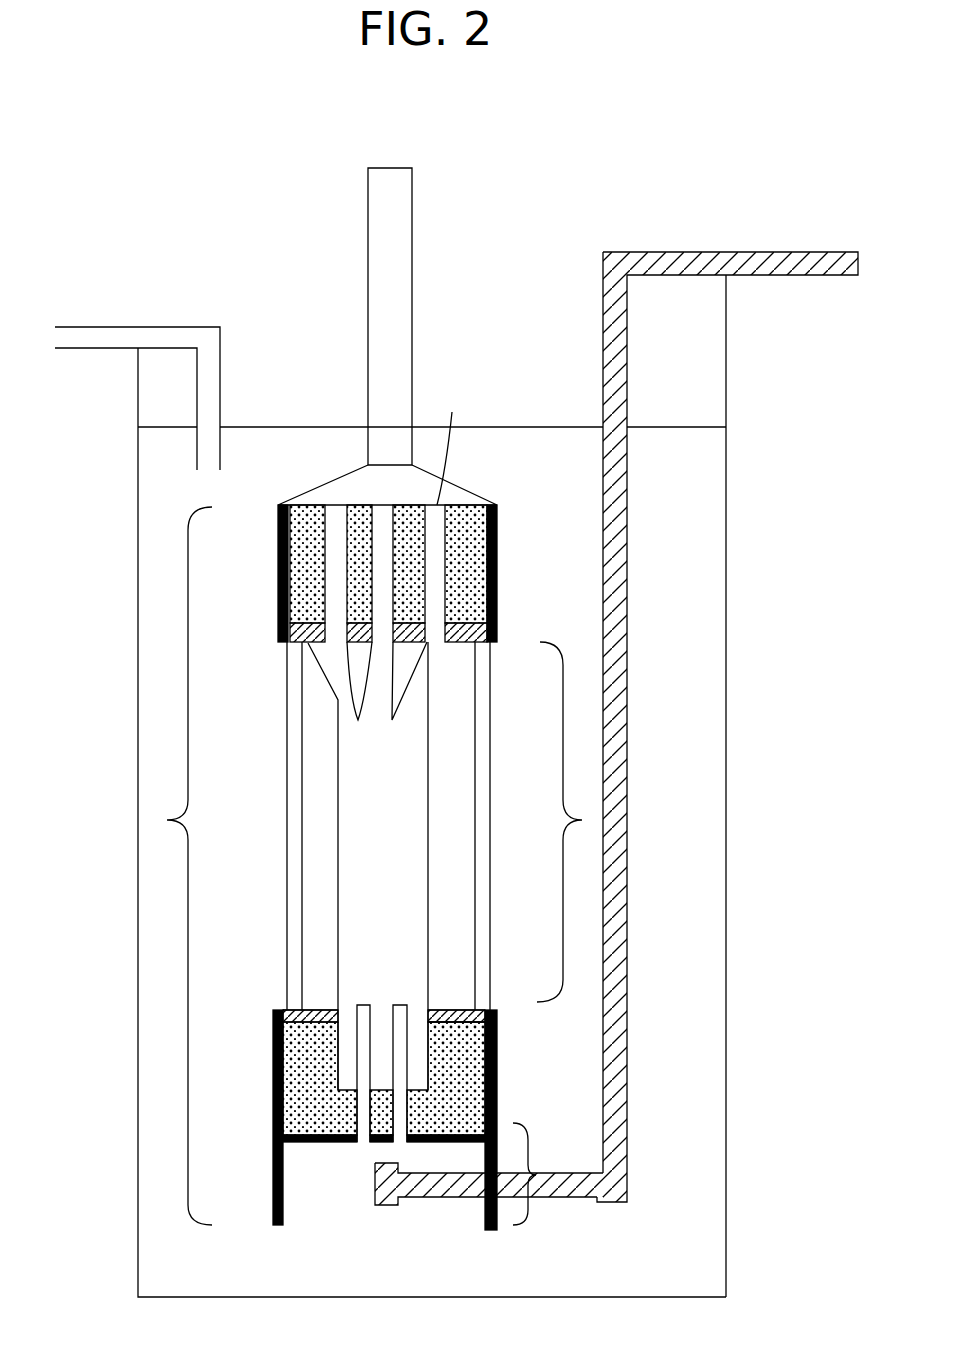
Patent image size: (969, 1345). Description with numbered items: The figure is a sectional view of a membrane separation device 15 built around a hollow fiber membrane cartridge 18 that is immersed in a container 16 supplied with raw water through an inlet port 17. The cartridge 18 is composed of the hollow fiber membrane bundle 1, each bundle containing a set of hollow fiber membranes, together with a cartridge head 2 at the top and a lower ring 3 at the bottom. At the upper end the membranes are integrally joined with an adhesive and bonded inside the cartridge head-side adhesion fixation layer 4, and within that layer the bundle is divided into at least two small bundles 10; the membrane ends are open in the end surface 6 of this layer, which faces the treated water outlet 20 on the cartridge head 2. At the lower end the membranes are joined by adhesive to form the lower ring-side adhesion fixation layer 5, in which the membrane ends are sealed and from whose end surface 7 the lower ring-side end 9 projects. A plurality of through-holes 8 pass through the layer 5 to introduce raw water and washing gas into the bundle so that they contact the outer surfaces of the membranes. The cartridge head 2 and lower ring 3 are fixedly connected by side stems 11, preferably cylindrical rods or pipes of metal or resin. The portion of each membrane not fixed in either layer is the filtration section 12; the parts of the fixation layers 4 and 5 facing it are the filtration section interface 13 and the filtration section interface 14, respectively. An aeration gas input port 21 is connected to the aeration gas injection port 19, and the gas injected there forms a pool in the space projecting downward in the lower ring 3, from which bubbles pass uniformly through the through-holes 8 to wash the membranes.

The hollow fiber membrane bundle 1 is at (405, 877).
The cartridge head 2 is at (500, 538).
The lower ring 3 is at (497, 1096).
The cartridge head-side adhesion fixation layer 4 is at (500, 592).
The lower ring-side adhesion fixation layer 5 is at (445, 1060).
The end surface of cartridge head-side adhesion fixation layer 6 is at (455, 439).
The end surface of lower ring-side adhesion fixation layer 7 is at (310, 1142).
The through-hole 8 is at (400, 1142).
The lower ring-side end 9 is at (537, 1174).
The small bundle 10 is at (345, 697).
The side stem 11 is at (300, 796).
The filtration section 12 is at (585, 820).
The filtration section interface of cartridge head-side adhesion fixation layer 13 is at (313, 647).
The filtration section interface of lower ring-side adhesion fixation layer 14 is at (320, 1010).
The membrane separation device 15 is at (728, 663).
The container 16 is at (138, 738).
The inlet port 17 is at (93, 342).
The hollow fiber membrane cartridge 18 is at (167, 820).
The aeration gas injection port 19 is at (395, 1160).
The treated water outlet 20 is at (395, 268).
The aeration gas input port 21 is at (626, 628).